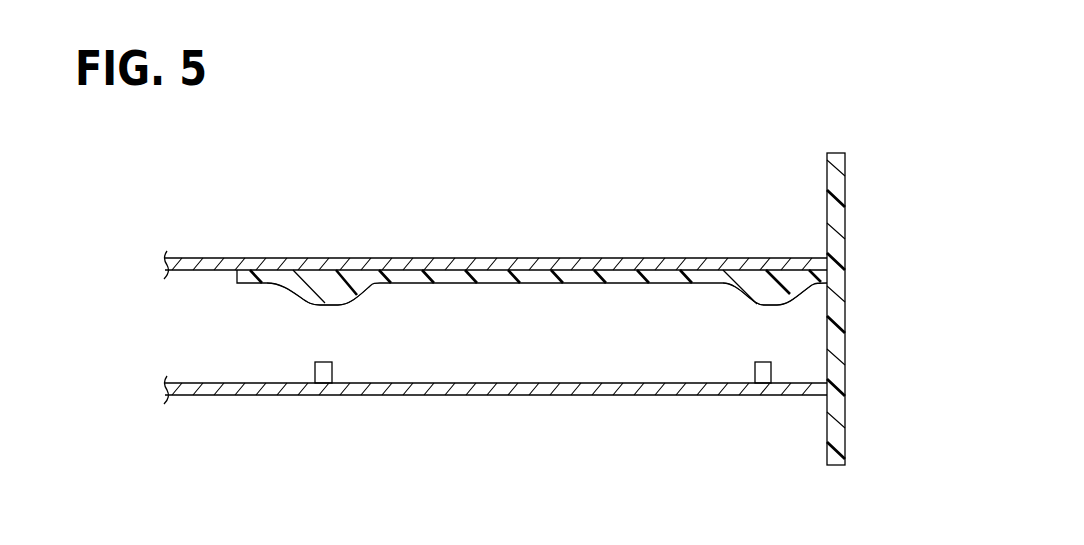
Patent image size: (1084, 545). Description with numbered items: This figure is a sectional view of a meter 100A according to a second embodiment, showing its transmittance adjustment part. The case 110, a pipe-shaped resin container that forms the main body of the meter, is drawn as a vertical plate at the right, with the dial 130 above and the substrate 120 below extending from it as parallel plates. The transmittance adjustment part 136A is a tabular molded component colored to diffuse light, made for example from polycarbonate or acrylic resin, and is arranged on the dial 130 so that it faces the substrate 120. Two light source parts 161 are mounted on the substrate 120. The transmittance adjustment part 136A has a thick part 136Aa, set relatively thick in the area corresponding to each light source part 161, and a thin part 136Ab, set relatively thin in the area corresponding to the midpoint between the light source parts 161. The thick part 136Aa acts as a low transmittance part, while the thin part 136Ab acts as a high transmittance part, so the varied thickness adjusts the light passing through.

The meter 100A is at (344, 238).
The case 110 is at (847, 305).
The substrate 120 is at (218, 395).
The dial 130 is at (213, 258).
The transmittance adjustment part 136A is at (513, 306).
The thick part 136Aa is at (287, 290).
The thin part 136Ab is at (540, 283).
The light source part 161 is at (333, 372).